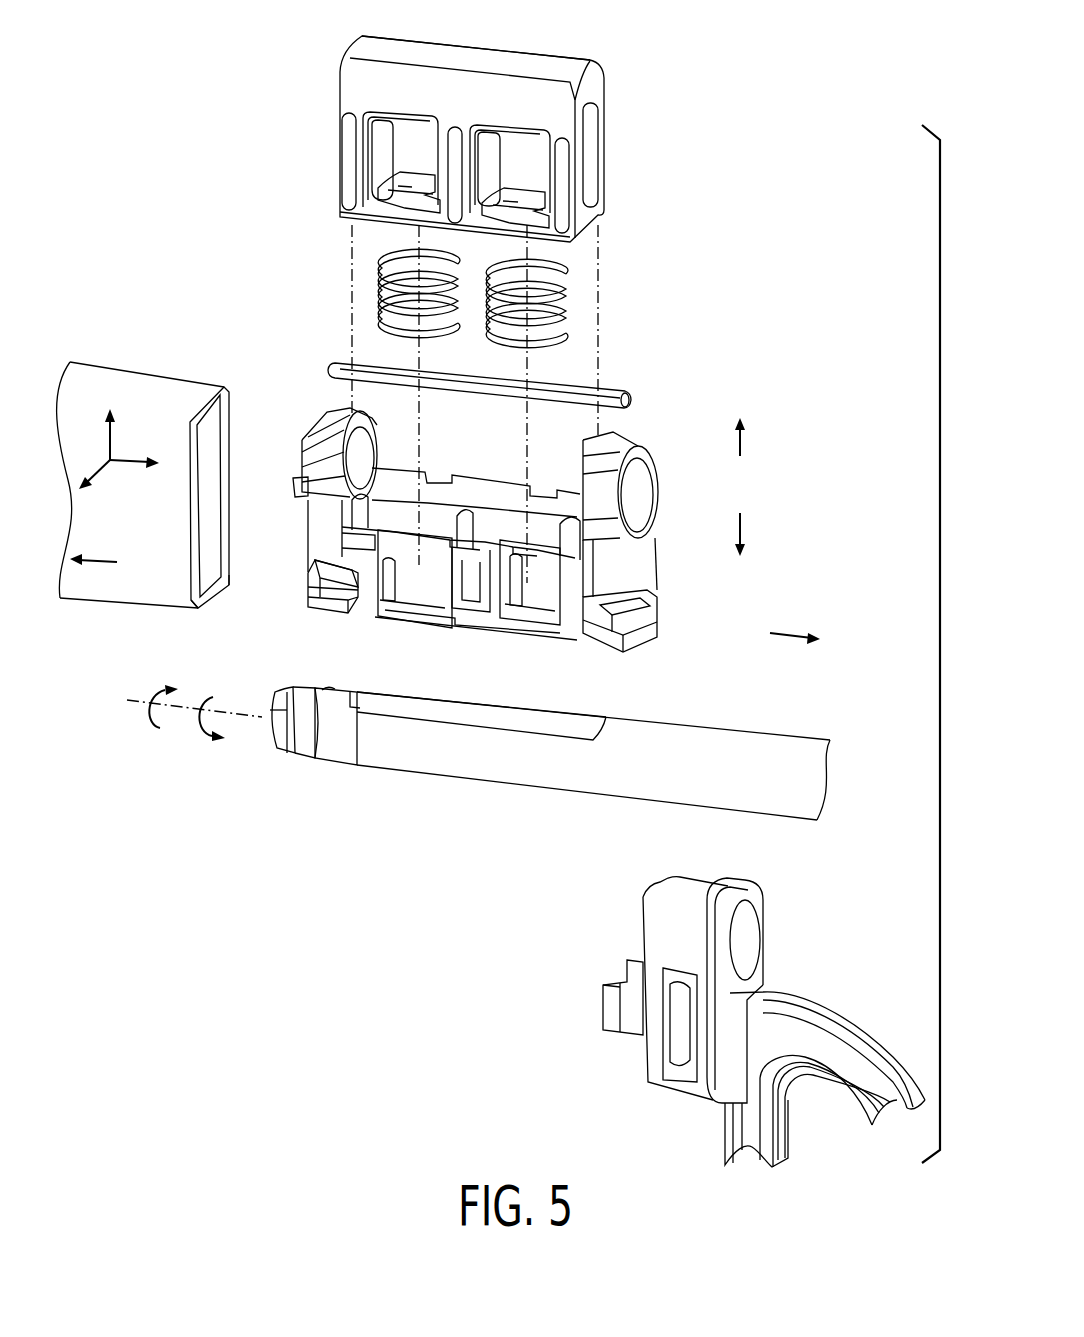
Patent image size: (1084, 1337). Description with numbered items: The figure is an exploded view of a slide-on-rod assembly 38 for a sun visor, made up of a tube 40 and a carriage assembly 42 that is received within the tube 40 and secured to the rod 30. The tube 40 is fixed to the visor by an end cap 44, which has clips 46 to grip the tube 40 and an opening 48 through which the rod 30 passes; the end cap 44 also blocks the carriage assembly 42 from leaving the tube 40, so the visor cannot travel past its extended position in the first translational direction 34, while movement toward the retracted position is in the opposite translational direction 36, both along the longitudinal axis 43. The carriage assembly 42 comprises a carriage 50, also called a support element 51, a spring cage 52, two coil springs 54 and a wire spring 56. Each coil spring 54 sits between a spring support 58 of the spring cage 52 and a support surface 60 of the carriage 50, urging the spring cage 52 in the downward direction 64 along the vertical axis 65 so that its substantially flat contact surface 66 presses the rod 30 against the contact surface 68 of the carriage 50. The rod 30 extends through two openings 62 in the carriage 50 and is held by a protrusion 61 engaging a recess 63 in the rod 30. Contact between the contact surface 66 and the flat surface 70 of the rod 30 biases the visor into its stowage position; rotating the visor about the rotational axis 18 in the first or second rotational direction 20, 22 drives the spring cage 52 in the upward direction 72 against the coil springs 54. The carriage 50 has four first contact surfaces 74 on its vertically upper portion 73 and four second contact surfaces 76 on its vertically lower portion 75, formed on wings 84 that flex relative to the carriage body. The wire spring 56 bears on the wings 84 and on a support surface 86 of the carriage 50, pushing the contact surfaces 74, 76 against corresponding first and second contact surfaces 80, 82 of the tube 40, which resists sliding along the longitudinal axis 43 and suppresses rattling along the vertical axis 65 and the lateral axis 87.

The rotational axis 18 is at (130, 702).
The first rotational direction 20 is at (152, 689).
The second rotational direction 22 is at (206, 696).
The rod 30 is at (535, 749).
The first translational direction 34 is at (102, 560).
The translational direction 36 is at (787, 634).
The slide-on-rod assembly 38 is at (184, 219).
The tube 40 is at (156, 488).
The carriage assembly 42 is at (667, 348).
The longitudinal axis 43 is at (130, 462).
The end cap 44 is at (756, 1014).
The clips 46 is at (627, 1030).
The opening 48 is at (762, 910).
The carriage 50 is at (483, 524).
The support element 51 is at (687, 633).
The spring cage 52 is at (436, 141).
The coil springs 54 is at (388, 287).
The wire spring 56 is at (548, 392).
The spring support 58 is at (407, 197).
The support surface 60 is at (435, 547).
The protrusion 61 is at (296, 482).
The openings 62 is at (360, 475).
The recess 63 is at (285, 731).
The downward direction 64 is at (742, 530).
The vertical axis 65 is at (112, 440).
The contact surface 66 is at (470, 57).
The contact surface 68 is at (473, 487).
The substantially flat surface 70 is at (497, 707).
The upward direction 72 is at (743, 452).
The vertically upper portion 73 is at (671, 469).
The first contact surfaces 74 is at (345, 438).
The vertically lower portion 75 is at (590, 667).
The second contact surfaces 76 is at (325, 622).
The first contact surfaces 80 is at (192, 420).
The second contact surfaces 82 is at (197, 607).
The wings 84 is at (302, 587).
The support surface 86 is at (498, 572).
The lateral axis 87 is at (100, 470).